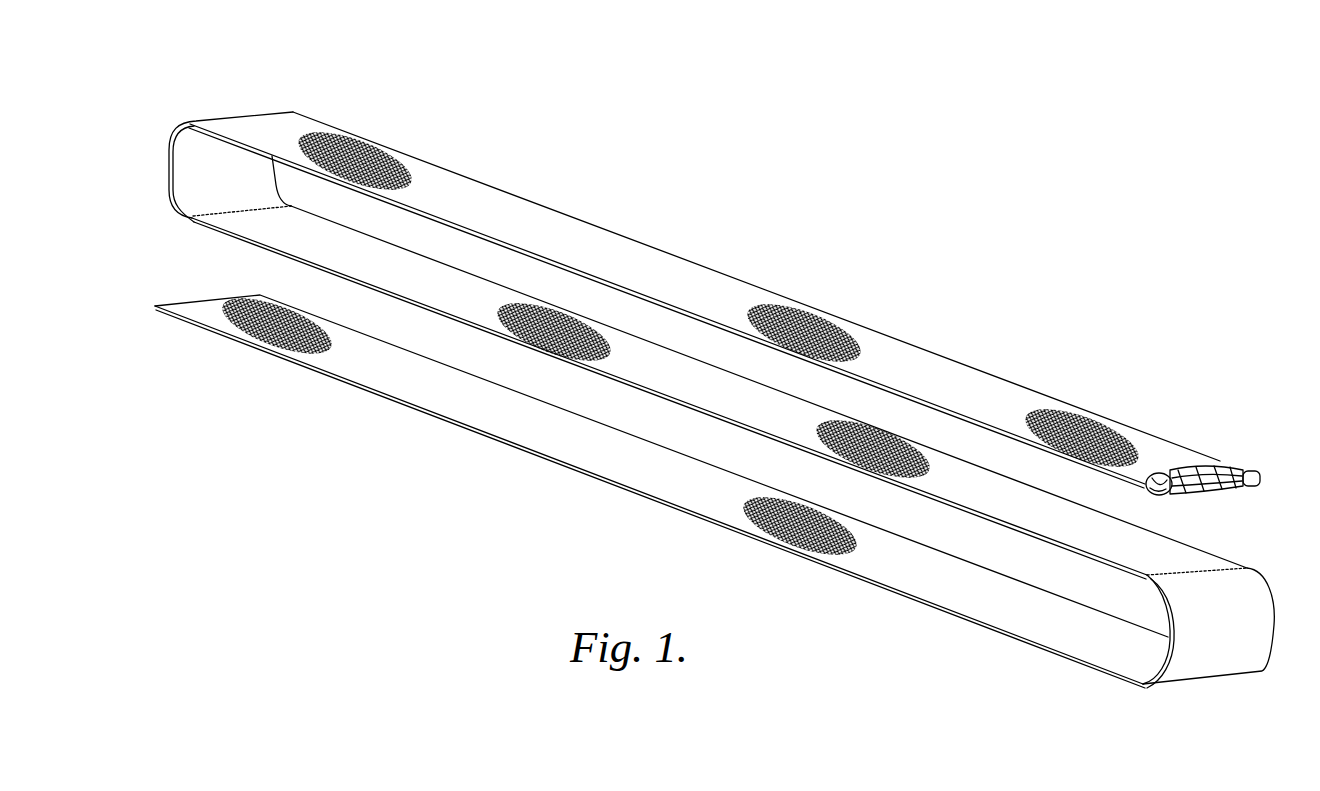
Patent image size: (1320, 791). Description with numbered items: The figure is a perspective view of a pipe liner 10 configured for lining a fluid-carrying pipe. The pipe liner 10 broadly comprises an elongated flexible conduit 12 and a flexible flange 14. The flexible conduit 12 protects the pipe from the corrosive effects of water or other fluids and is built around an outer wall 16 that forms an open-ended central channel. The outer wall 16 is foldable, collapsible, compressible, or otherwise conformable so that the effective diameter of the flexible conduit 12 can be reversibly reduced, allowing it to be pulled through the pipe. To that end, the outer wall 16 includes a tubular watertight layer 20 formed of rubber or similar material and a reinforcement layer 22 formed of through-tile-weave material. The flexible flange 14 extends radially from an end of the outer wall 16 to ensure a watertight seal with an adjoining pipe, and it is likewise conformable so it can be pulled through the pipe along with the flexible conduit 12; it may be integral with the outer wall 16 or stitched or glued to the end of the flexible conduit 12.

The pipe liner 10 is at (883, 198).
The flexible conduit 12 is at (152, 145).
The flexible flange 14 is at (1267, 490).
The outer wall 16 is at (272, 228).
The tubular watertight layer 20 is at (683, 272).
The reinforcement layer 22 is at (797, 323).